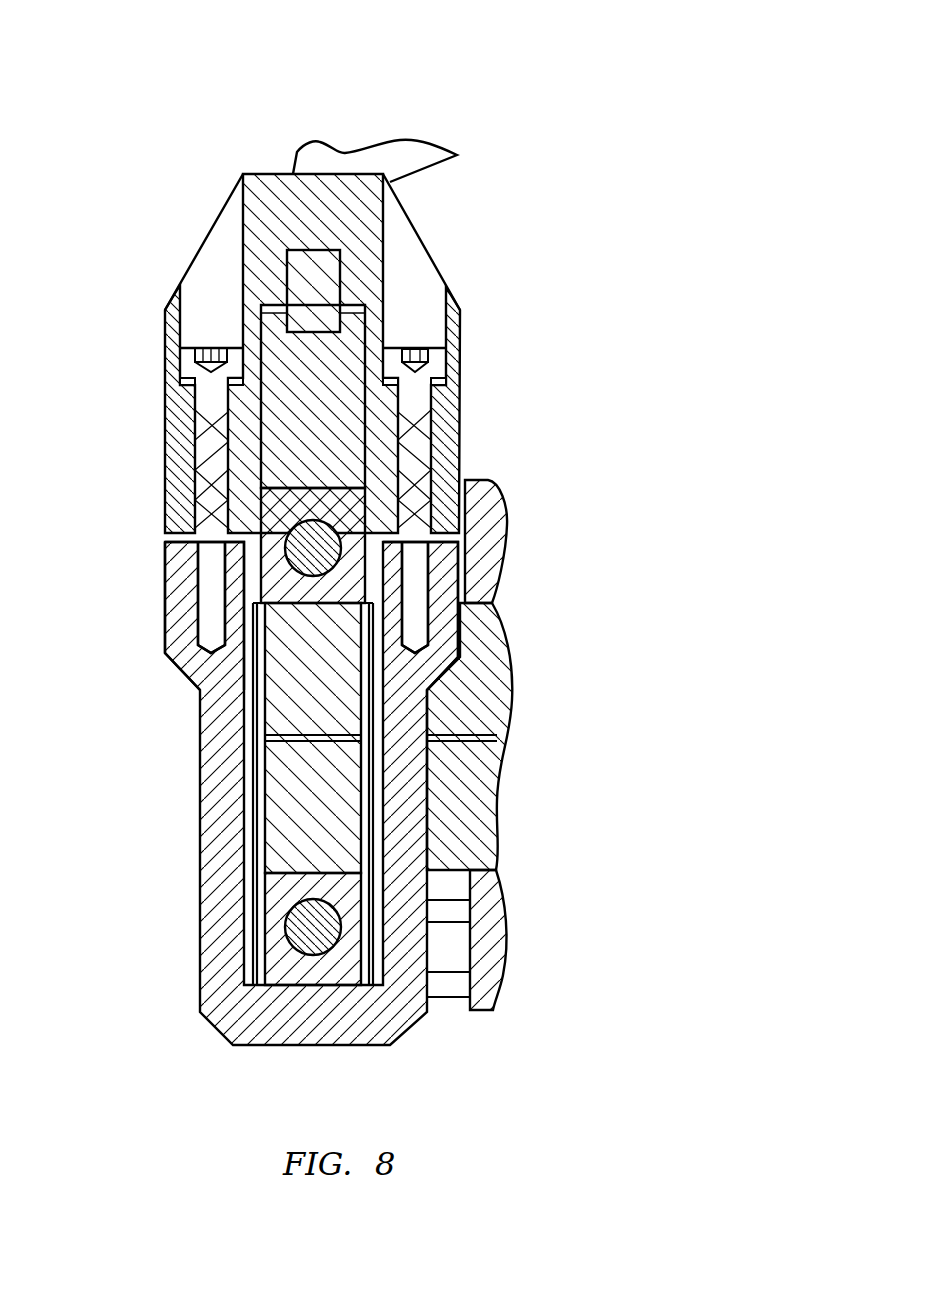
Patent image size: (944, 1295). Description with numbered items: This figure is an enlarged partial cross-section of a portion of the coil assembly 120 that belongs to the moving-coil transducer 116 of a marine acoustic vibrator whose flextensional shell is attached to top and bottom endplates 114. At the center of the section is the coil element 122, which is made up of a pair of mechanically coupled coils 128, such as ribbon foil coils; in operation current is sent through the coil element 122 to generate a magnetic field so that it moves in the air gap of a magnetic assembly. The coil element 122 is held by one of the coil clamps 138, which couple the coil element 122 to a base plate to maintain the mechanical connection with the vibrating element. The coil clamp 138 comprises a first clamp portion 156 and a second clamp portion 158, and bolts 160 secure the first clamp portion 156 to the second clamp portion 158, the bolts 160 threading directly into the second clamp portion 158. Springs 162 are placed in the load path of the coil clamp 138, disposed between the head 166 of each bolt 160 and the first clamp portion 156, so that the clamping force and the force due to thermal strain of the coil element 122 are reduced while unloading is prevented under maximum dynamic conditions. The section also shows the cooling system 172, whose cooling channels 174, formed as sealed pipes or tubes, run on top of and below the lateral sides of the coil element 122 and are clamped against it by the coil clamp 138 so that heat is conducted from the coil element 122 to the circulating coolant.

The endplates 114 is at (312, 112).
The moving-coil transducer 116 is at (447, 363).
The coil assembly 120 is at (652, 365).
The coil element 122 is at (342, 782).
The coils 128 is at (340, 690).
The coil clamps 138 is at (160, 485).
The first clamp portion 156 is at (182, 352).
The second clamp portion 158 is at (180, 592).
The bolts 160 is at (190, 347).
The springs 162 is at (186, 382).
The head 166 is at (205, 410).
The cooling system 172 is at (178, 944).
The cooling channels 174 is at (290, 567).